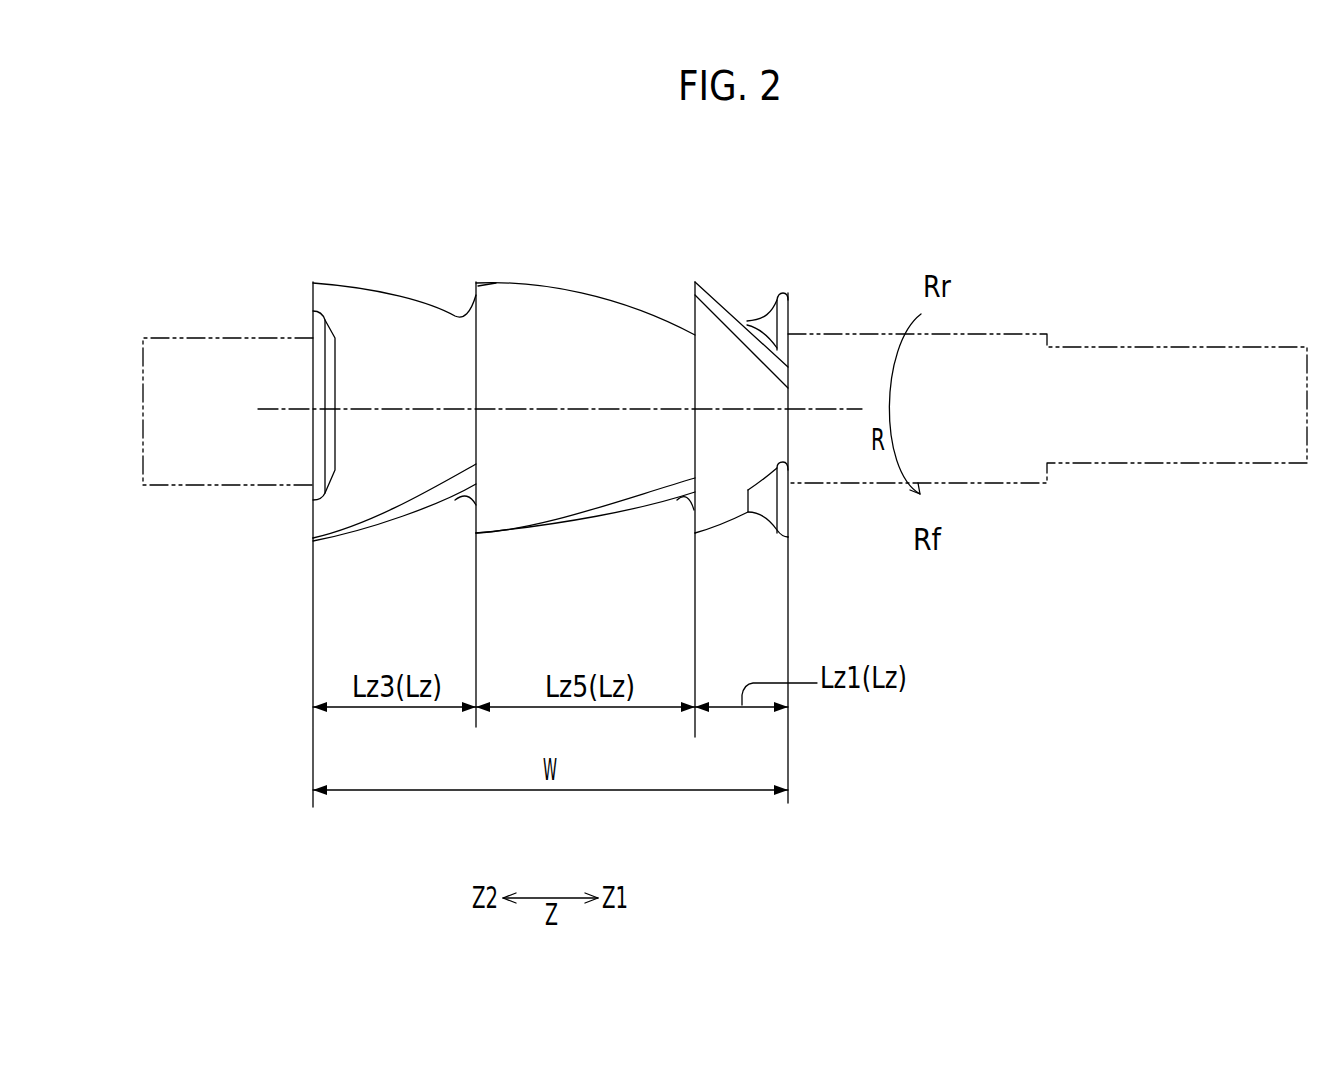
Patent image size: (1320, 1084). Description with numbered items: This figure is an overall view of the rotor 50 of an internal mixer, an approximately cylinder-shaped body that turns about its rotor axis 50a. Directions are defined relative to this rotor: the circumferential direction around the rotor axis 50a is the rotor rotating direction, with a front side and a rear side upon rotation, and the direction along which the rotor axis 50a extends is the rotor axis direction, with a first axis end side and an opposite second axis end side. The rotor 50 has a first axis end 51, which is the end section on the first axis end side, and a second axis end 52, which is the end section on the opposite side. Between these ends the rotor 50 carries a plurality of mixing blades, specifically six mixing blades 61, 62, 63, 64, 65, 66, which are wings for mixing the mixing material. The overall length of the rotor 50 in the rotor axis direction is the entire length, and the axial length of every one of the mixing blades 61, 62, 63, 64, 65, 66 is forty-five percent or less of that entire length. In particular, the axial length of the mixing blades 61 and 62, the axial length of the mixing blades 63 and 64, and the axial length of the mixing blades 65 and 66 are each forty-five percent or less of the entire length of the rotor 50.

The rotor 50 is at (225, 240).
The rotor axis 50a is at (283, 407).
The first axis end 51 is at (790, 397).
The second axis end 52 is at (313, 400).
The mixing blade 61 is at (735, 503).
The mixing blade 62 is at (729, 340).
The mixing blade 63 is at (390, 503).
The mixing blade 64 is at (393, 310).
The mixing blade 65 is at (590, 503).
The mixing blade 66 is at (578, 310).